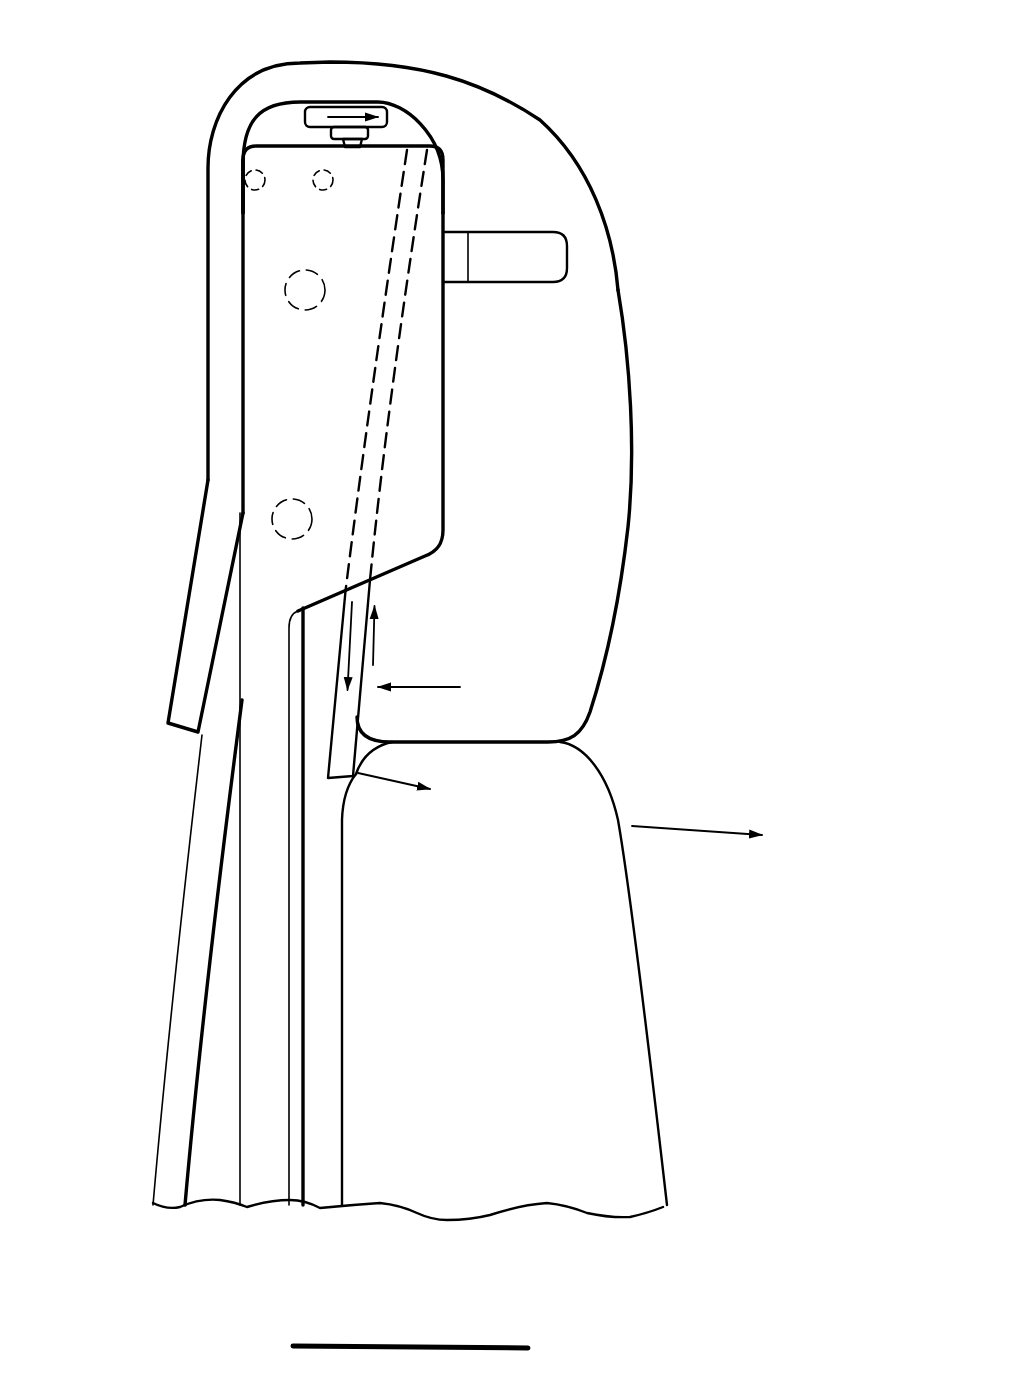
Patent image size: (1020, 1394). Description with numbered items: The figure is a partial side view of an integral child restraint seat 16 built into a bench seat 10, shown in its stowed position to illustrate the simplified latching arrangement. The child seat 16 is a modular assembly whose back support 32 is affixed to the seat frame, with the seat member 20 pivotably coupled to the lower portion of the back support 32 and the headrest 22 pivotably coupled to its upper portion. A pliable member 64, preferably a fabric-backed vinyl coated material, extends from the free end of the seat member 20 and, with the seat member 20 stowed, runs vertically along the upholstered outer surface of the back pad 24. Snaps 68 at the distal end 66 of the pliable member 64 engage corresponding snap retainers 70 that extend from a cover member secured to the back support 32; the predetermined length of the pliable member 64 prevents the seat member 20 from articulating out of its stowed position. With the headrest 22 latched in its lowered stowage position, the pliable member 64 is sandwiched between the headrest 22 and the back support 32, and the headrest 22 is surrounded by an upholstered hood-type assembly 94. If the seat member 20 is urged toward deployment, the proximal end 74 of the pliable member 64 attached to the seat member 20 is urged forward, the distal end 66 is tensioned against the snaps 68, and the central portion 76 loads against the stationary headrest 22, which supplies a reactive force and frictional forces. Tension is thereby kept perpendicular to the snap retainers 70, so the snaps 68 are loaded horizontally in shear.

The bench seat 10 is at (666, 440).
The integral child restraint seat 16 is at (633, 596).
The seat member 20 is at (592, 976).
The headrest 22 is at (597, 339).
The back pad 24 is at (303, 993).
The back support 32 is at (256, 928).
The pliable member 64 is at (385, 586).
The distal end 66 is at (315, 118).
The snaps 68 is at (333, 132).
The snap retainers 70 is at (349, 144).
The proximal end 74 is at (350, 775).
The central portion 76 is at (383, 392).
The upholstered hood-type assembly 94 is at (211, 435).